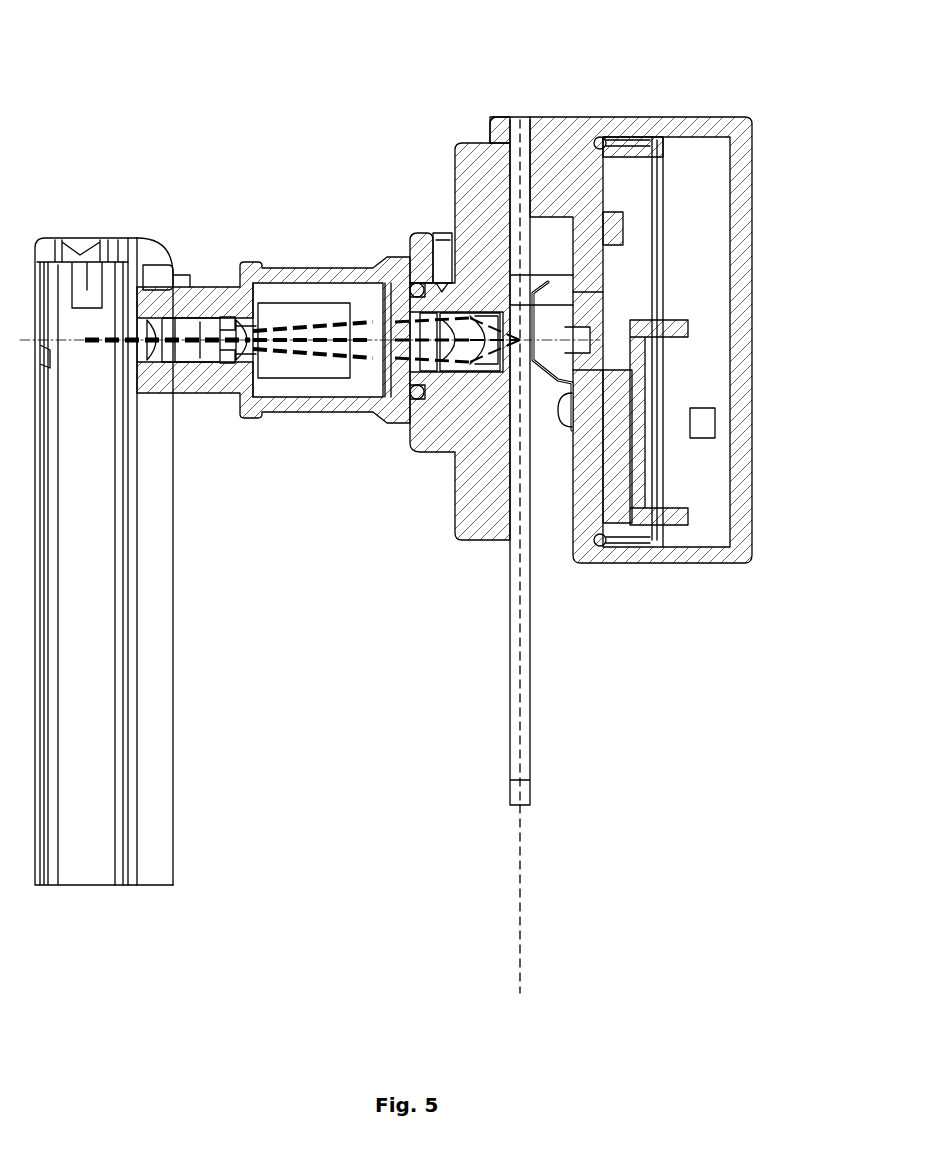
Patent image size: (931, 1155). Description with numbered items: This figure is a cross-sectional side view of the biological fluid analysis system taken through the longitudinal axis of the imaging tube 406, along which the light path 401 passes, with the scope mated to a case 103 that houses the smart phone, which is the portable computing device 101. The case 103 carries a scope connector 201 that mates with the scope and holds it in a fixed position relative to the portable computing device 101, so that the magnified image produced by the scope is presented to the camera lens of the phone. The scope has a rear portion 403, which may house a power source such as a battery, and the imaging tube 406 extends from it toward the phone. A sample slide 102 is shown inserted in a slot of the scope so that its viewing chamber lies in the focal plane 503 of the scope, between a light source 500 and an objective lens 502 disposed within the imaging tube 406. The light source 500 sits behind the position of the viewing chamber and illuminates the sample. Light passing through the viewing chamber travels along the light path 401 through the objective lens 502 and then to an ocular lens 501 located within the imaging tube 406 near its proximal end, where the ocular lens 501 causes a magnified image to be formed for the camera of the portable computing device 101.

The portable computing device 101 is at (85, 873).
The sample slide 102 is at (532, 630).
The case 103 is at (160, 778).
The scope connector 201 is at (153, 268).
The light path 401 is at (370, 372).
The rear portion 403 is at (692, 372).
The imaging tube 406 is at (135, 110).
The light source 500 is at (590, 335).
The ocular lens 501 is at (157, 352).
The objective lens 502 is at (463, 365).
The focal plane 503 is at (524, 925).